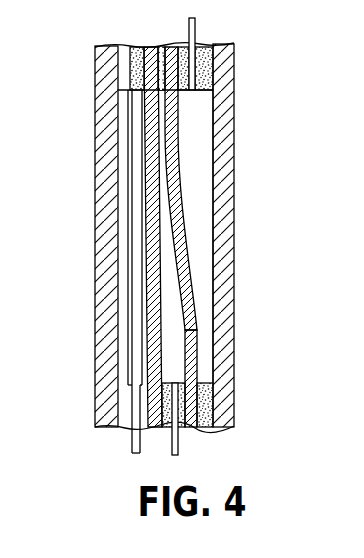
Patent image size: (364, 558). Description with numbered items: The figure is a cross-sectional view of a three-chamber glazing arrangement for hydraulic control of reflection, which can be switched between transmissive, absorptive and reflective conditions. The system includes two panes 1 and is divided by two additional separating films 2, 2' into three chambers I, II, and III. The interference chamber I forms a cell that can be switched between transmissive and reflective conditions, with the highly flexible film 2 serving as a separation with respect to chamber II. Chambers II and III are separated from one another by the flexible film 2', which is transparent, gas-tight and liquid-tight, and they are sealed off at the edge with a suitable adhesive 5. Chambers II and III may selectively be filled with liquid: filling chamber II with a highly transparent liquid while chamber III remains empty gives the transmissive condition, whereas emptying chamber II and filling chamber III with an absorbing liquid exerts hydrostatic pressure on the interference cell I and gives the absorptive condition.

The pane 1 is at (97, 113).
The adhesive 5 is at (163, 47).
The interference chamber I is at (132, 213).
The separating film 2 is at (103, 237).
The chamber II is at (180, 281).
The flexible film 2' is at (227, 381).
The chamber III is at (207, 184).